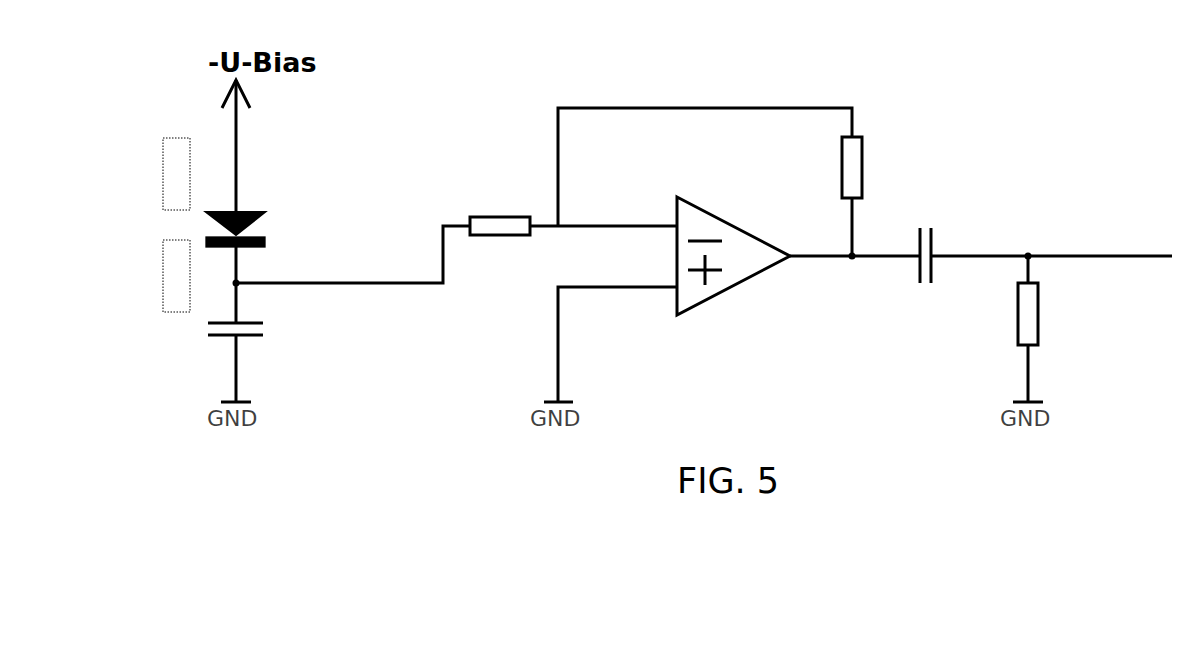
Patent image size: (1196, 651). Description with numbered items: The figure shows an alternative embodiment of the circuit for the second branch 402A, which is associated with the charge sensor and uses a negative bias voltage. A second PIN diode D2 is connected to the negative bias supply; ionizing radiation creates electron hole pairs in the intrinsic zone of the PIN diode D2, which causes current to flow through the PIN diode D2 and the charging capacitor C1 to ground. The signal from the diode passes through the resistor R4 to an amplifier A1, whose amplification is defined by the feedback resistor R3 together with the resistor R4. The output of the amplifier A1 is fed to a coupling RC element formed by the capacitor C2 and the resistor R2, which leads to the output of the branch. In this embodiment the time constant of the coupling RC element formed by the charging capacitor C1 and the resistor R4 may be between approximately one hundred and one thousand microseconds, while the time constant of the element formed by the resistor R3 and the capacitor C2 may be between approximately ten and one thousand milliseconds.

The second branch 402A is at (938, 103).
The second PIN diode D2 is at (249, 206).
The charging capacitor C1 is at (251, 342).
The resistor R4 is at (573, 211).
The amplifier A1 is at (738, 283).
The resistor R3 is at (867, 196).
The capacitor C2 is at (1039, 242).
The resistor R2 is at (1044, 329).